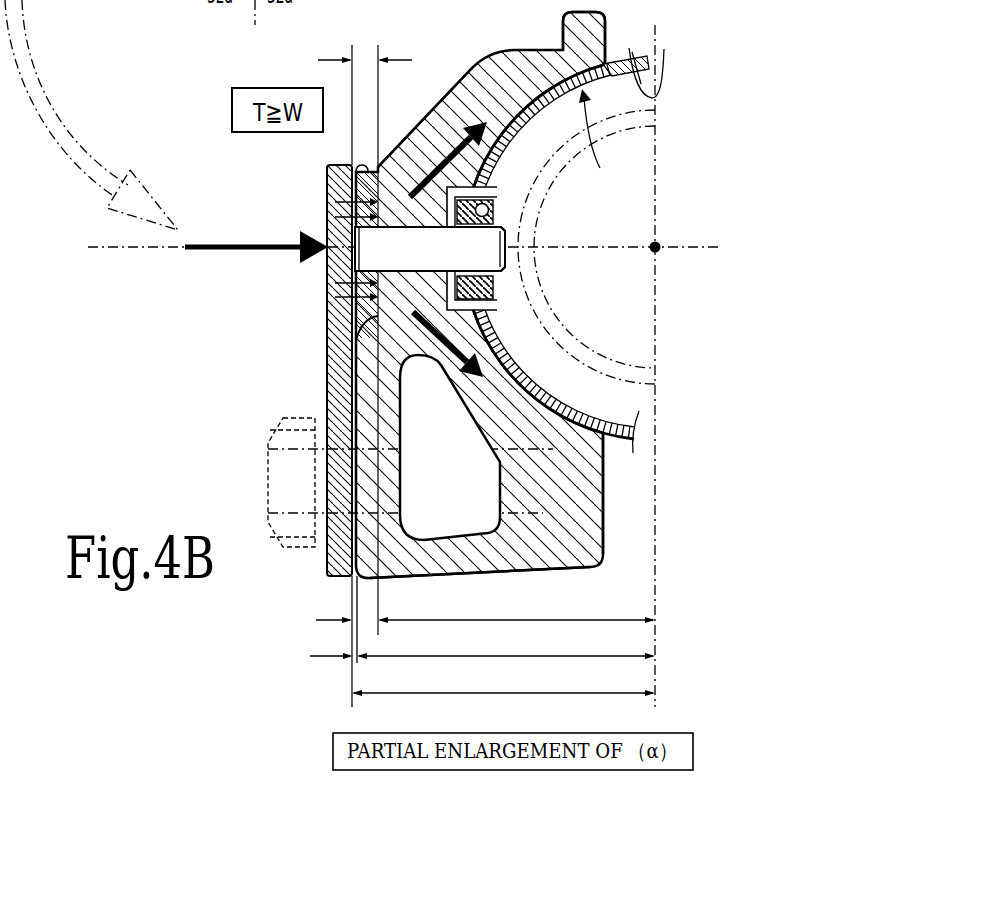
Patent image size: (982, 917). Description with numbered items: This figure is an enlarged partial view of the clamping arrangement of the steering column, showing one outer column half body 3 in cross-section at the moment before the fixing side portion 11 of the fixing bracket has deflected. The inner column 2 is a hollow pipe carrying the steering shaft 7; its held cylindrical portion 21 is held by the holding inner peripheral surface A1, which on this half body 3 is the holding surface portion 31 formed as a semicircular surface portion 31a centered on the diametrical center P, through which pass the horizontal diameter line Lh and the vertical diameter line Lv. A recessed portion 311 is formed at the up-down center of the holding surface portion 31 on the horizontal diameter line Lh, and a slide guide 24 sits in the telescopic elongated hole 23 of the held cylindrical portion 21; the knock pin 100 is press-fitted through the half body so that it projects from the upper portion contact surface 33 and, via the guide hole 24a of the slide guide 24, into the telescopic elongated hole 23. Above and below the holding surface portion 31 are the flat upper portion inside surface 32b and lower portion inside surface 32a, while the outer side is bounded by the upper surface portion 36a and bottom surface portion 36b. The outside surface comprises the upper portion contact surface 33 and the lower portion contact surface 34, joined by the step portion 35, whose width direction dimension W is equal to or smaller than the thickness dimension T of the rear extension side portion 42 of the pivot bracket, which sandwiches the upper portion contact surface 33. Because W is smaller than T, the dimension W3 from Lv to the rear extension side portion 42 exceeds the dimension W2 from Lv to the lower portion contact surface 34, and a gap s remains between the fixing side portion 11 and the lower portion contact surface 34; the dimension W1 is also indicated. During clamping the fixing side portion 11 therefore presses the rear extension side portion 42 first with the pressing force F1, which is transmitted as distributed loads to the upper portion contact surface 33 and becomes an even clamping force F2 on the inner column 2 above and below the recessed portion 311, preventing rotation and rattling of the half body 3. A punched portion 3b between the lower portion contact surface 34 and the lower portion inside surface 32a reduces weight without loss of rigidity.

The outer column half body 3 is at (490, 48).
The punched portion 3b is at (485, 486).
The fixing side portion 11 is at (327, 373).
The lower portion contact surface 34 is at (348, 407).
The upper portion contact surface 33 is at (352, 180).
The rear extension side portion 42 is at (352, 158).
The step portion 35 is at (360, 318).
The upper surface portion 36a is at (447, 83).
The bottom surface portion 36b is at (434, 570).
The lower portion inside surface 32a is at (603, 492).
The upper portion inside surface 32b is at (603, 25).
The holding surface portion 31 is at (553, 400).
The semicircular surface portion 31a is at (557, 392).
The held cylindrical portion 21 is at (667, 43).
The inner column 2 is at (608, 113).
The steering shaft 7 is at (592, 350).
The telescopic elongated hole 23 is at (486, 212).
The slide guide 24 is at (492, 217).
The guide hole 24a is at (510, 232).
The knock pin 100 is at (502, 259).
The recessed portion 311 is at (490, 298).
The holding inner peripheral surface A1 is at (602, 136).
The diametrical center P is at (660, 243).
The vertical diameter line Lv is at (663, 77).
The horizontal diameter line Lh is at (721, 245).
The pressing force F1 is at (256, 264).
The clamping force F2 is at (457, 246).
The thickness dimension T is at (365, 56).
The width direction dimension W is at (334, 607).
The gap s is at (333, 619).
The width W1 is at (516, 607).
The dimension from vertical diameter line to lower portion contact surface W2 is at (506, 644).
The dimension from vertical diameter line to rear extension side portion W3 is at (503, 681).